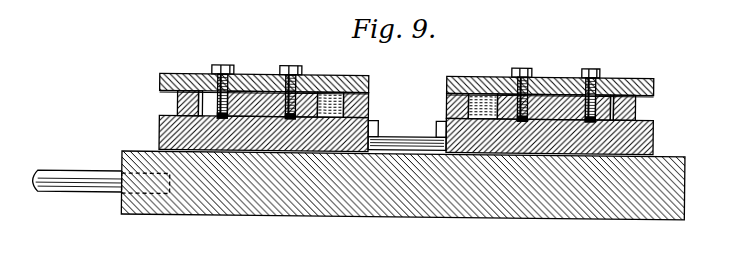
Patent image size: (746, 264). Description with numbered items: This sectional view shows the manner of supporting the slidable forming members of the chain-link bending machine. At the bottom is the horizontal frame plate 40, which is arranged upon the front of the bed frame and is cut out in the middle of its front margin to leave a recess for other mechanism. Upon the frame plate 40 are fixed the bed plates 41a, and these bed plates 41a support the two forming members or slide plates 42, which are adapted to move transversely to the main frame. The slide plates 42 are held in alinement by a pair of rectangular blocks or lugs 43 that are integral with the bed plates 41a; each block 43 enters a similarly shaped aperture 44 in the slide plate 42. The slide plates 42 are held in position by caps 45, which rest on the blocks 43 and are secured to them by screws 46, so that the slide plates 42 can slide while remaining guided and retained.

The frame plate 40 is at (593, 213).
The bed plates 41a is at (158, 124).
The slide plates 42 is at (446, 104).
The rectangular blocks 43 is at (306, 97).
The apertures 44 is at (356, 77).
The caps 45 is at (446, 81).
The screws 46 is at (230, 66).